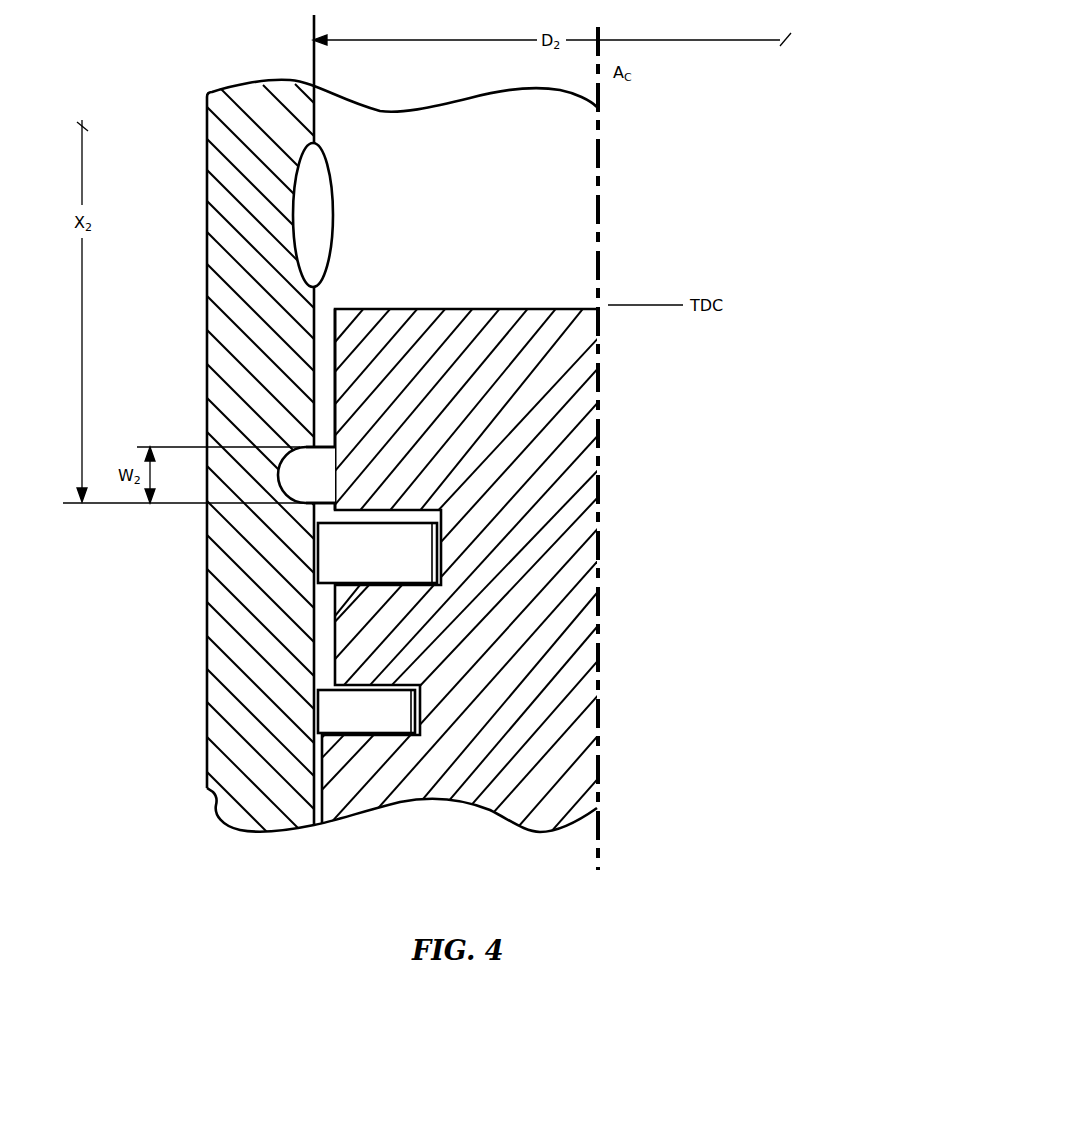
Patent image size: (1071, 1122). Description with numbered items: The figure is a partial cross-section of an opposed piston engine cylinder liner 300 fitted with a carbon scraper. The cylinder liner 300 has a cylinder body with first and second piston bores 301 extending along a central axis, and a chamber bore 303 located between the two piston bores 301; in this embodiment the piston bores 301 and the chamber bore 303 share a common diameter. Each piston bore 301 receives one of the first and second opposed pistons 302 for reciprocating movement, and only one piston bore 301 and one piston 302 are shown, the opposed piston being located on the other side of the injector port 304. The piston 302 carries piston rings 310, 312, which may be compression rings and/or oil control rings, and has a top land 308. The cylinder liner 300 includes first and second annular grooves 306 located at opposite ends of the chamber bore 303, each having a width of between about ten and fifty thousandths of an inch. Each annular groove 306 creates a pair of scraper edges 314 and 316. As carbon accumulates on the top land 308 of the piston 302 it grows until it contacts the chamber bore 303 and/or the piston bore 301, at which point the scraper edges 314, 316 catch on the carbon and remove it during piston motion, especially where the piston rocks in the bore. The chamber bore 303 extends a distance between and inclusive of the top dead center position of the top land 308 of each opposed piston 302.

The cylinder liner 300 is at (207, 118).
The piston bore 301 is at (300, 803).
The piston 302 is at (571, 304).
The chamber bore 303 is at (316, 124).
The injector port 304 is at (320, 215).
The annular groove 306 is at (305, 489).
The top land 308 is at (335, 380).
The piston ring 310 is at (330, 563).
The piston ring 312 is at (327, 717).
The scraper edge 314 is at (310, 444).
The scraper edge 316 is at (310, 505).